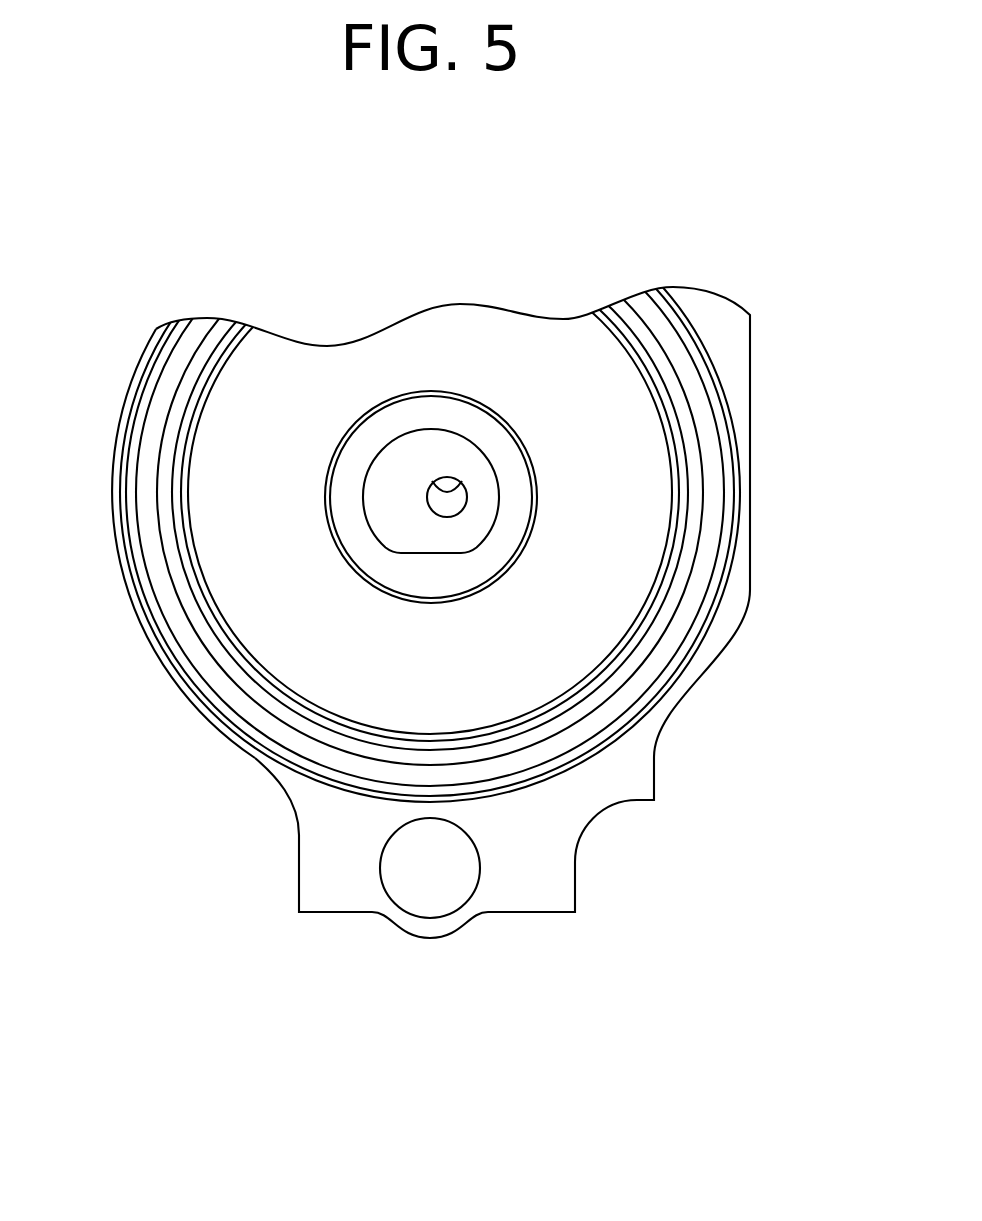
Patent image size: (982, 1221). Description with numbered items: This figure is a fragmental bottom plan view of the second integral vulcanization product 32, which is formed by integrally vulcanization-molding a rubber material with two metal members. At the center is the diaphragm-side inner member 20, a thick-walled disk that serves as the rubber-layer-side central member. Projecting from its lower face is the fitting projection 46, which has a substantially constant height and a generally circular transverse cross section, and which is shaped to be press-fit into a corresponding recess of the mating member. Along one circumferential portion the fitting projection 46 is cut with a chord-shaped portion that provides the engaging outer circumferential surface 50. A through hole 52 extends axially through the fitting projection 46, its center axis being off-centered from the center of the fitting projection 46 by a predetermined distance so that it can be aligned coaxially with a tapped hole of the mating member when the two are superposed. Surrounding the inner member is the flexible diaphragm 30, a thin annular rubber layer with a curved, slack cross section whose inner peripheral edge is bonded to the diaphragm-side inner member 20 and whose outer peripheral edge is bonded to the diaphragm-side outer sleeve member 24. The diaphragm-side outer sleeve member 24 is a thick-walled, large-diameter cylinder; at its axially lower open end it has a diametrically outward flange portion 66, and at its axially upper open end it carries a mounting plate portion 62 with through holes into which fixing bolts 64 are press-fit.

The second integral vulcanization product 32 is at (306, 289).
The through hole 52 is at (436, 481).
The fitting projection 46 is at (460, 460).
The engaging outer circumferential surface 50 is at (438, 553).
The flexible diaphragm 30 is at (602, 424).
The diaphragm-side inner member 20 is at (353, 532).
The flange portion 66 is at (160, 592).
The diaphragm-side outer sleeve member 24 is at (718, 642).
The fixing bolt 64 is at (433, 882).
The mounting plate portion 62 is at (522, 888).